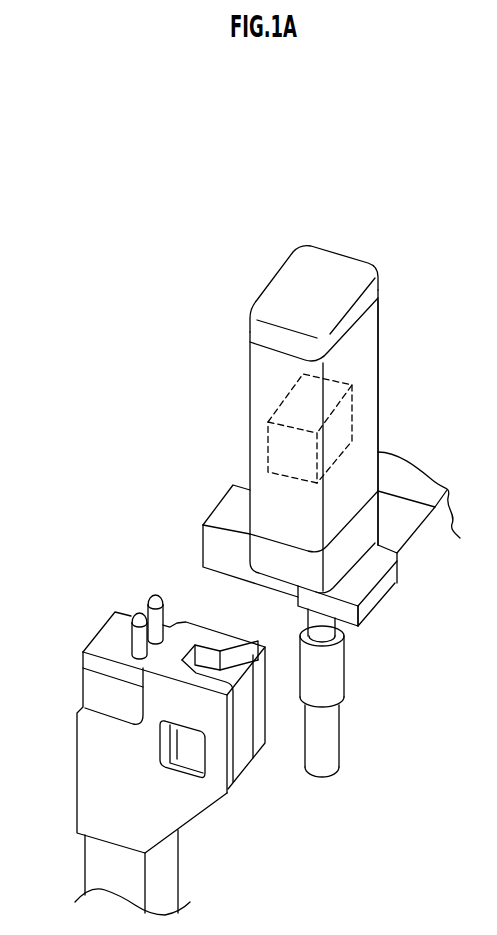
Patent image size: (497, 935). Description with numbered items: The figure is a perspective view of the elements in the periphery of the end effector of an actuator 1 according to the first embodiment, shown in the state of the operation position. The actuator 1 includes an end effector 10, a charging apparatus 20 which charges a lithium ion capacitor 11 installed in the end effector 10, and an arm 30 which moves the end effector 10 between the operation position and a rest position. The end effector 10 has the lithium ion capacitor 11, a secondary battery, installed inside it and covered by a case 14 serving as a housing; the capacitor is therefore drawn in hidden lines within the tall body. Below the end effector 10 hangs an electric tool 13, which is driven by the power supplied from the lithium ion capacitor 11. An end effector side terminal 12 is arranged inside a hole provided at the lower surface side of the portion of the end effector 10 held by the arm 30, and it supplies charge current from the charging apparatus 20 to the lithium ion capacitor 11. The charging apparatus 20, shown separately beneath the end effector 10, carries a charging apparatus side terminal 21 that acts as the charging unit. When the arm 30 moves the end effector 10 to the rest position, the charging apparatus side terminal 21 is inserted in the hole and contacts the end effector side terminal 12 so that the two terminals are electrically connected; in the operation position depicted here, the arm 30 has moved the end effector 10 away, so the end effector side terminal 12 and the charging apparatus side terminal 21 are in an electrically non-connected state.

The actuator 1 is at (172, 447).
The end effector 10 is at (395, 277).
The lithium ion capacitor 11 is at (352, 384).
The end effector side terminal 12 is at (202, 548).
The electric tool 13 is at (327, 747).
The case 14 is at (372, 432).
The charging apparatus 20 is at (103, 753).
The charging apparatus side terminal 21 is at (131, 625).
The arm 30 is at (413, 548).